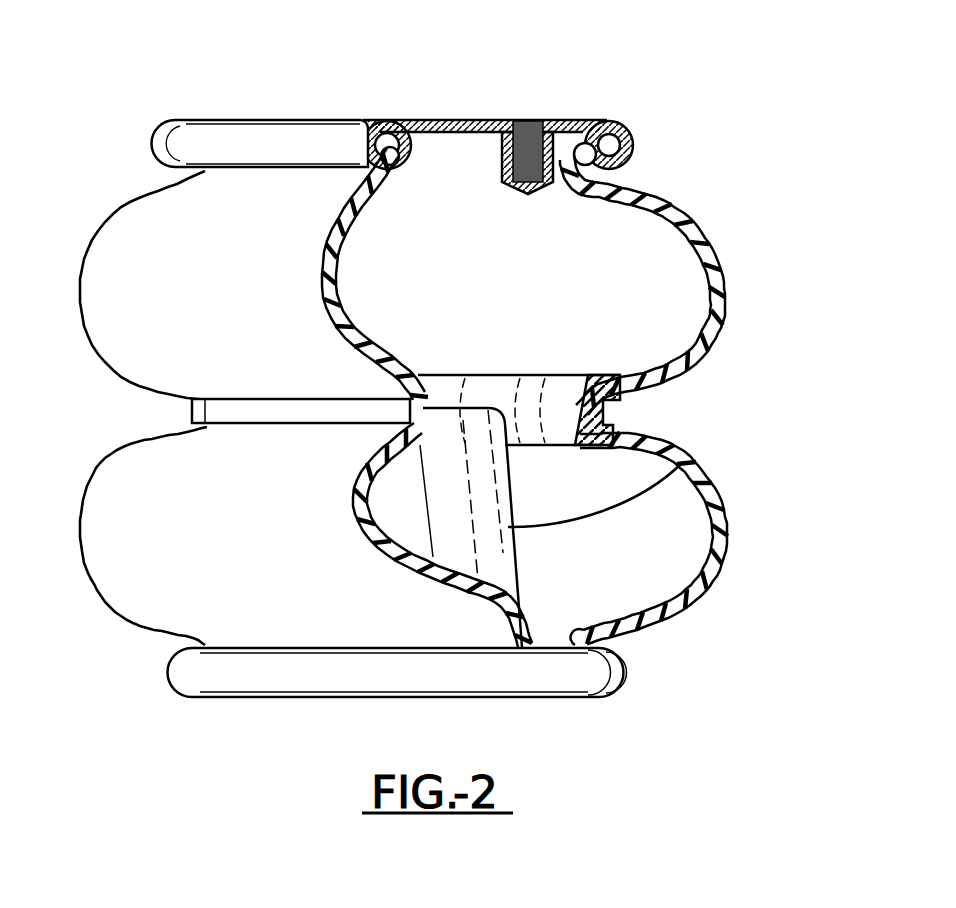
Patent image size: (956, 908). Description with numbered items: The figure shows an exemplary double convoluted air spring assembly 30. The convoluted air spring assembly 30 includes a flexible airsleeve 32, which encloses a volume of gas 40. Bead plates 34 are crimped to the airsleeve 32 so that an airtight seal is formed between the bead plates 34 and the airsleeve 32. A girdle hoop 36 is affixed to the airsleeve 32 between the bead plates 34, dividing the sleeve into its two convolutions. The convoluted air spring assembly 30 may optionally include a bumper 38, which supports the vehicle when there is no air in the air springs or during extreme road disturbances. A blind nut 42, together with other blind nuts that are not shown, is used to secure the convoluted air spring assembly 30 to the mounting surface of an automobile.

The convoluted air spring assembly 30 is at (731, 214).
The flexible airsleeve 32 is at (724, 293).
The bead plates 34 is at (633, 128).
The girdle hoop 36 is at (192, 412).
The bumper 38 is at (699, 464).
The volume of gas 40 is at (654, 346).
The blind nut 42 is at (530, 121).